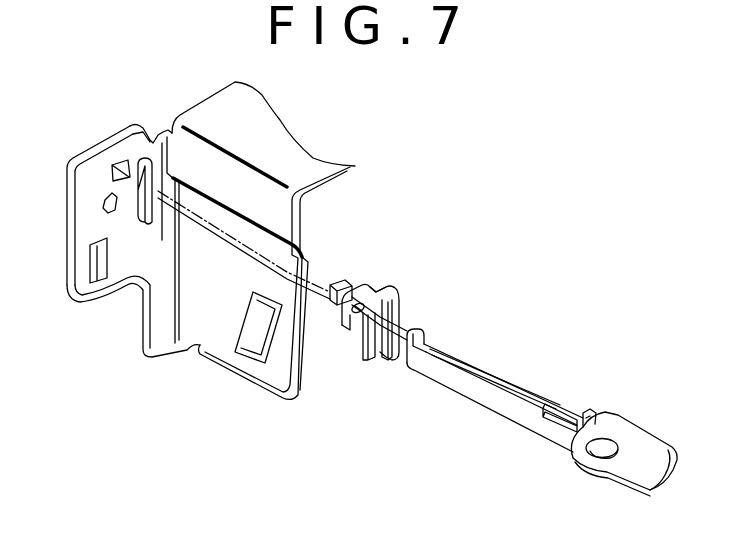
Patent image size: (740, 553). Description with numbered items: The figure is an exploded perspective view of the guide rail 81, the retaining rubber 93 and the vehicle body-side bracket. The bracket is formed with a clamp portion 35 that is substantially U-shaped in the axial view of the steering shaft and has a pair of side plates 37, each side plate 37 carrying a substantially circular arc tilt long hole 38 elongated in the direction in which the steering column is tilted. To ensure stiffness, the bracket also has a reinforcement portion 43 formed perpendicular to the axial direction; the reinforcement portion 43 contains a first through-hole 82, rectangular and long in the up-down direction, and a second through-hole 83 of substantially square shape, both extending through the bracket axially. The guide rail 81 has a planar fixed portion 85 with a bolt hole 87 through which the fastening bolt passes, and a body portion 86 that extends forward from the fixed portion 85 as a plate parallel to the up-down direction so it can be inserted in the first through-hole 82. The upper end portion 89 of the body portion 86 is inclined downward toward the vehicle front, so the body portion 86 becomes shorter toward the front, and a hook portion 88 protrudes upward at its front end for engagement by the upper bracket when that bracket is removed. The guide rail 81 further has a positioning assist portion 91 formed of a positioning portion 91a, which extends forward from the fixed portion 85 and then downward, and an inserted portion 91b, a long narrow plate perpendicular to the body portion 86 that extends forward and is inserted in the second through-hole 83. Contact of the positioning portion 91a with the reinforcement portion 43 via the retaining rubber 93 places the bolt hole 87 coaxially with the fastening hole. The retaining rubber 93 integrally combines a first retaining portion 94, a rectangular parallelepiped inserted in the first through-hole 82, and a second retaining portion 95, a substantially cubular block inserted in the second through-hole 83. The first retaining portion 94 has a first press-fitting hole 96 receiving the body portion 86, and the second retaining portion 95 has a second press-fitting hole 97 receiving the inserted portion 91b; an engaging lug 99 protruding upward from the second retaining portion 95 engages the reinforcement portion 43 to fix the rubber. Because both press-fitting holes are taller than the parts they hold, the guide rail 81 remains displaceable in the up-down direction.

The clamp portion 35 is at (207, 100).
The side plate 37 is at (207, 343).
The tilt long hole 38 is at (258, 320).
The reinforcement portion 43 is at (80, 192).
The first through-hole 82 is at (133, 125).
The second through-hole 83 is at (118, 160).
The guide rail 81 is at (549, 404).
The fixed portion 85 is at (578, 454).
The body portion 86 is at (467, 392).
The bolt hole 87 is at (600, 453).
The hook portion 88 is at (418, 333).
The upper end portion 89 is at (518, 388).
The positioning assist portion 91 is at (587, 377).
The positioning portion 91a is at (585, 413).
The inserted portion 91b is at (553, 410).
The retaining rubber 93 is at (386, 300).
The first retaining portion 94 is at (397, 286).
The second retaining portion 95 is at (366, 285).
The first press-fitting hole 96 is at (375, 364).
The second press-fitting hole 97 is at (368, 362).
The engaging lug 99 is at (342, 282).